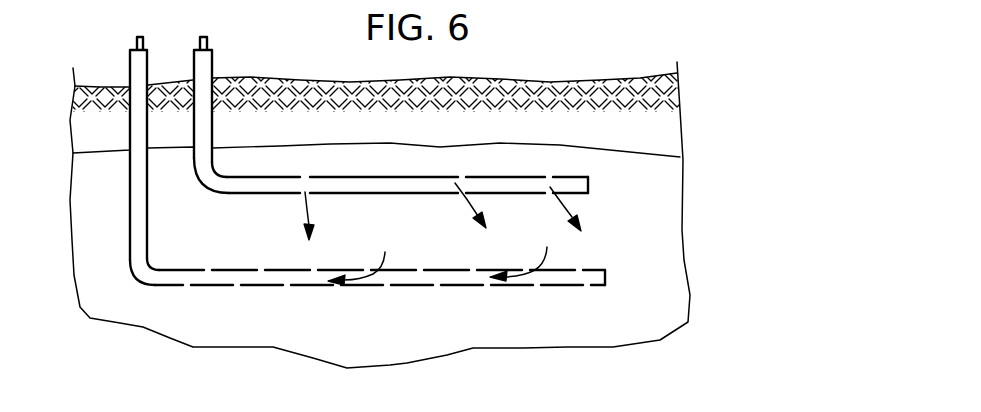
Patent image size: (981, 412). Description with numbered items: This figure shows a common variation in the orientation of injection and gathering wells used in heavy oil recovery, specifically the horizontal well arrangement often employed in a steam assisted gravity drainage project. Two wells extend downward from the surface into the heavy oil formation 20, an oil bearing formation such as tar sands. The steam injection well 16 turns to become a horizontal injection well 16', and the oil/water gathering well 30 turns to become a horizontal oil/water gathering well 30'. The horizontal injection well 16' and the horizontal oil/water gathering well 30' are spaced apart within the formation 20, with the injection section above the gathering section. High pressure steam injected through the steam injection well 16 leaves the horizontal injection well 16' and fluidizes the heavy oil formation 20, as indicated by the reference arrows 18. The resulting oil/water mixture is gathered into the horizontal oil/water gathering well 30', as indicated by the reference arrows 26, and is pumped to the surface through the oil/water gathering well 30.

The steam injection well 16 is at (228, 99).
The horizontal injection well 16' is at (391, 153).
The reference arrows 18 is at (304, 202).
The heavy oil formation 20 is at (393, 226).
The reference arrows 26 is at (385, 252).
The oil/water gathering well 30 is at (142, 159).
The horizontal oil/water gathering well 30' is at (367, 261).